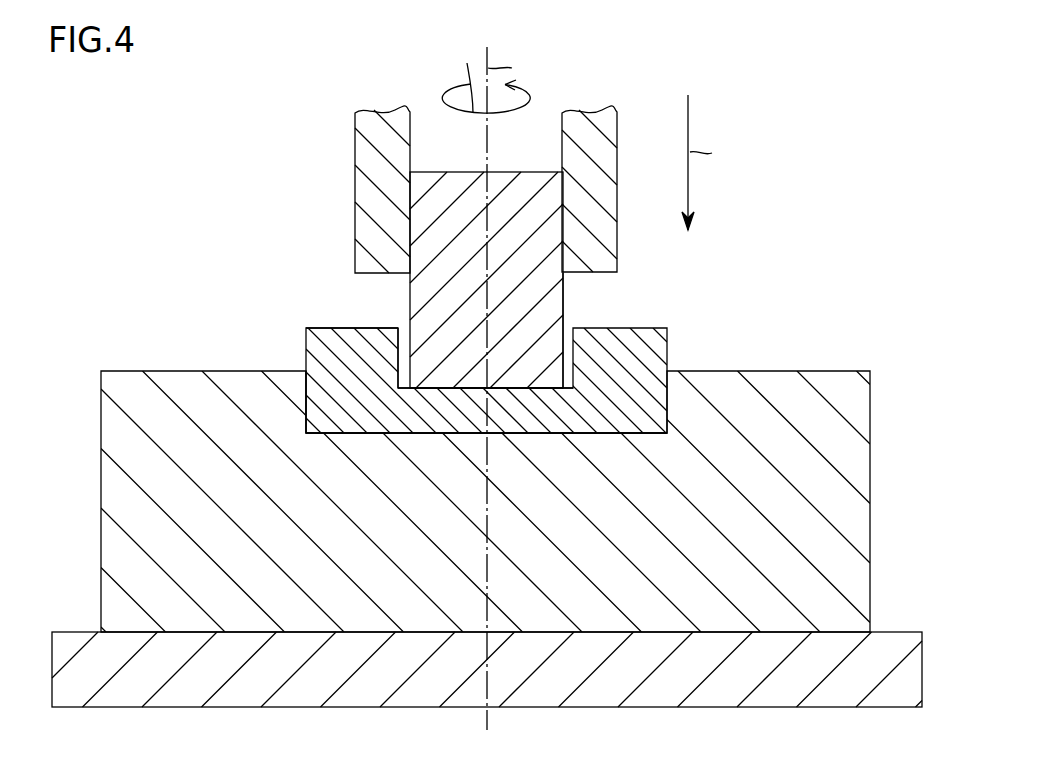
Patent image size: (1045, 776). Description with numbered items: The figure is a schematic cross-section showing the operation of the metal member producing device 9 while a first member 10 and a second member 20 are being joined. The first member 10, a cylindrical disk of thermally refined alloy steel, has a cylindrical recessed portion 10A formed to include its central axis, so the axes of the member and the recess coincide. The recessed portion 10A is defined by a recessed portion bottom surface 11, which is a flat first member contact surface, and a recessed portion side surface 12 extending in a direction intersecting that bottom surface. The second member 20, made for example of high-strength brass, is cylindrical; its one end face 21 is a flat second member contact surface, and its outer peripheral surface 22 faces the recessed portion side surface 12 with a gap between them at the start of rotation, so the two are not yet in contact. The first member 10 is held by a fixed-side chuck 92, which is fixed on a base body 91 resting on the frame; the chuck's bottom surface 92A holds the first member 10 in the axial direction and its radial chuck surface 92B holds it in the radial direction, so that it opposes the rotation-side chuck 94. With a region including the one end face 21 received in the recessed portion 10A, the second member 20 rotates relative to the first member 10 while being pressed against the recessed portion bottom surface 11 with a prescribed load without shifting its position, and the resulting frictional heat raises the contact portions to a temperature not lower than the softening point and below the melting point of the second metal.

The polishing apparatus 9 is at (786, 102).
The first member 10 is at (652, 343).
The recessed portion 10A is at (402, 326).
The recessed portion bottom surface 11 is at (465, 388).
The recessed portion side surface 12 is at (420, 367).
The second member 20 is at (548, 298).
The one end face 21 is at (443, 389).
The outer peripheral surface 22 is at (565, 287).
The base body 91 is at (845, 688).
The fixed-side chuck 92 is at (823, 513).
The bottom surface 92A is at (562, 425).
The radial chuck surface 92B is at (308, 397).
The rotation-side chuck 94 is at (596, 148).